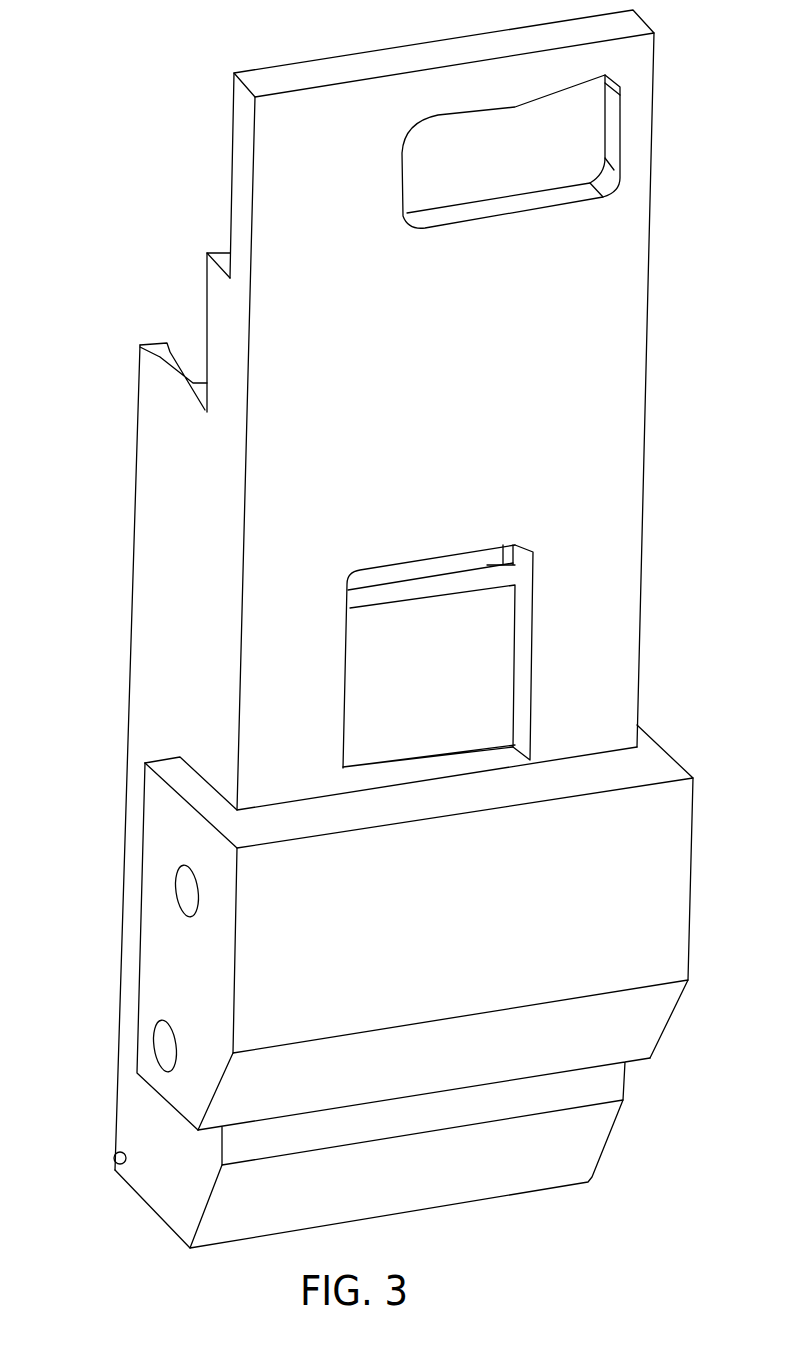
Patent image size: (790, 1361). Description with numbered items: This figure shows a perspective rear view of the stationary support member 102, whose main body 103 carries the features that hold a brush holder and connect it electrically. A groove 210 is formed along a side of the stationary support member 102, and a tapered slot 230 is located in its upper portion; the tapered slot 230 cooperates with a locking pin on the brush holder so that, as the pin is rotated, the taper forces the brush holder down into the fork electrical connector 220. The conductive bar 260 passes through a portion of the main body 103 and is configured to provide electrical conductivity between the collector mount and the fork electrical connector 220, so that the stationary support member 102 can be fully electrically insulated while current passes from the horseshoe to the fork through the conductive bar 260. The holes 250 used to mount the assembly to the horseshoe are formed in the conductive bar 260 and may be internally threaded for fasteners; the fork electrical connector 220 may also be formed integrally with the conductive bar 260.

The stationary support member 102 is at (170, 94).
The main body 103 is at (471, 404).
The groove 210 is at (145, 350).
The fork electrical connector 220 is at (456, 673).
The tapered slot 230 is at (511, 151).
The holes 250 is at (183, 886).
The conductive bar 260 is at (486, 928).